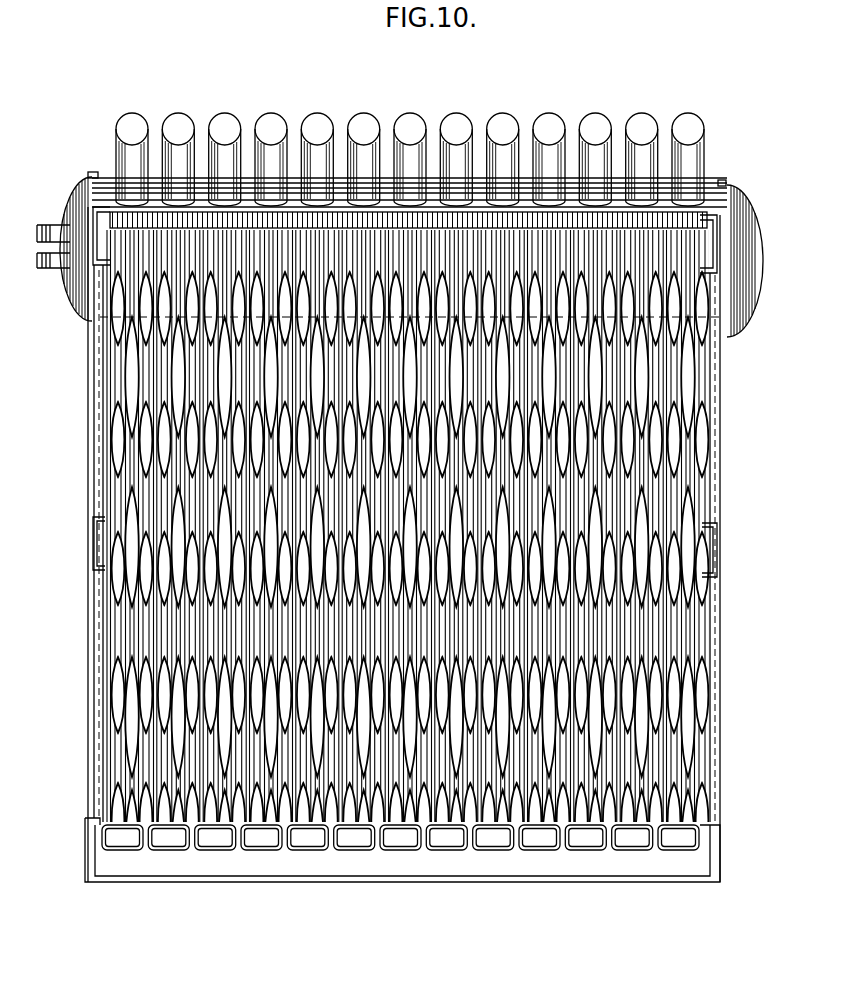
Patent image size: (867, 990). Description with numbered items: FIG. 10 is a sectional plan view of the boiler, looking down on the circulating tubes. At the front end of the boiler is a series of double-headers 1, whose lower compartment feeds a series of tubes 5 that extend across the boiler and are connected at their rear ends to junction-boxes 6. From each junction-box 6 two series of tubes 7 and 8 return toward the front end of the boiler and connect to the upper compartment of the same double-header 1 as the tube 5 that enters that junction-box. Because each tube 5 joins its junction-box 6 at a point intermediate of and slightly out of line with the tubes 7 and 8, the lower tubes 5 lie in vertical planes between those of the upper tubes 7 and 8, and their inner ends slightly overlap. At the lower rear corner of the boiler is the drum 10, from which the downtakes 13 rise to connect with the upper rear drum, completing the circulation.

The double-headers 1 is at (347, 843).
The tubes 5 is at (128, 548).
The junction-boxes 6 is at (125, 218).
The tubes 7 is at (140, 637).
The tubes 8 is at (115, 478).
The drum 10 is at (706, 206).
The downtakes 13 is at (227, 123).